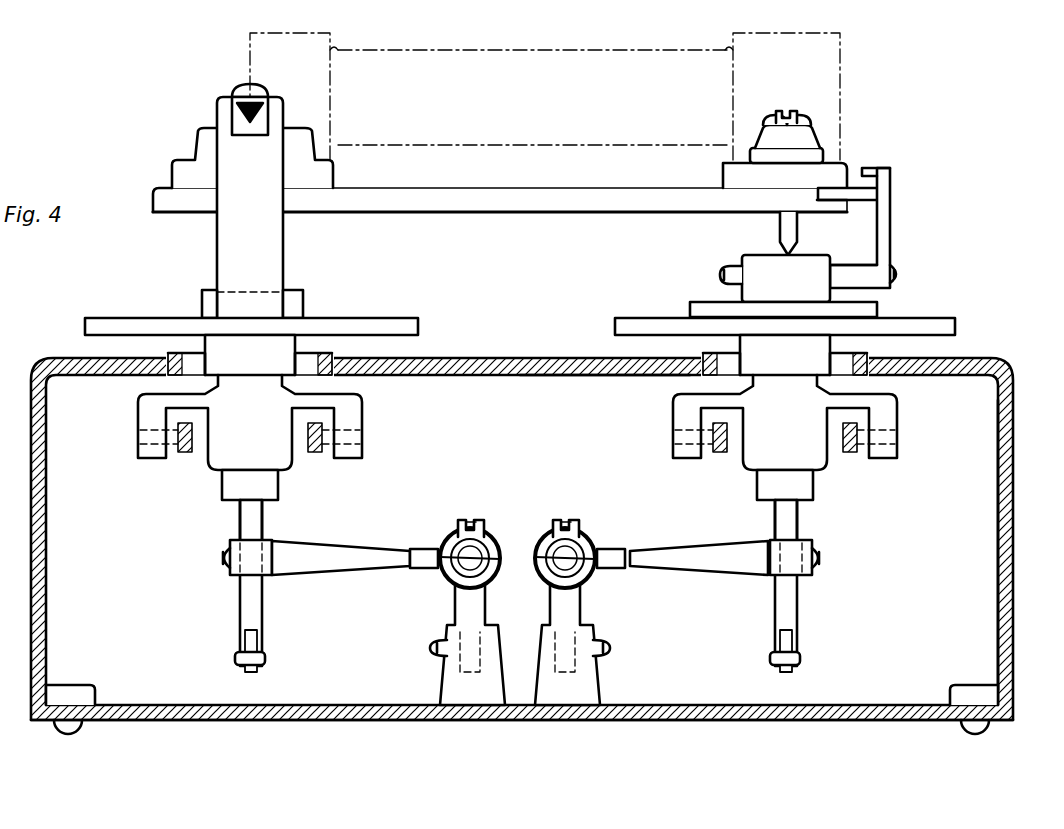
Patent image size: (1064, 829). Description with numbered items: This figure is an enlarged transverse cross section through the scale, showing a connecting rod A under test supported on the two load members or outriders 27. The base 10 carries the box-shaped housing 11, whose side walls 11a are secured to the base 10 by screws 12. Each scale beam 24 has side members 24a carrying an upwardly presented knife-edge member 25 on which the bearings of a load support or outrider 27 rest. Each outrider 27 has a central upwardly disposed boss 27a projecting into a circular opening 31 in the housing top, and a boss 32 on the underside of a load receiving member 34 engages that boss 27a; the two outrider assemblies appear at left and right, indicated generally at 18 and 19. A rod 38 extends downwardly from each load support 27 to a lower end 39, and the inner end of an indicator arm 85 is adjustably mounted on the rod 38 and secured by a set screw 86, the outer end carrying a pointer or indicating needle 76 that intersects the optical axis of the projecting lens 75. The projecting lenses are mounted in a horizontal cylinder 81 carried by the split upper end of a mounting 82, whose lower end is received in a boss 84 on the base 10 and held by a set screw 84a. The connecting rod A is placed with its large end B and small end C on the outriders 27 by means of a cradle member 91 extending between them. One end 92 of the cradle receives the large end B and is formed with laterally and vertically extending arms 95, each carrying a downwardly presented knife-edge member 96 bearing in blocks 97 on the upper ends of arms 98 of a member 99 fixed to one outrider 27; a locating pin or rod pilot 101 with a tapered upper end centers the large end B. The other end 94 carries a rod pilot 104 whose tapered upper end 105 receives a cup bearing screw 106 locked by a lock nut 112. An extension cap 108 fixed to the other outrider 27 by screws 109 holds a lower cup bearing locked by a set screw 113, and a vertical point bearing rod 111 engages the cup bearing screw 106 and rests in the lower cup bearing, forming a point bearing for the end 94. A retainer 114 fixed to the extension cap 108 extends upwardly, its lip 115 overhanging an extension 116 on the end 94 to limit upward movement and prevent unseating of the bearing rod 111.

The base 10 is at (218, 718).
The housing 11 is at (35, 374).
The side walls 11a is at (520, 362).
The screws 12 is at (70, 733).
The left relay 18 is at (182, 502).
The right relay 19 is at (857, 502).
The scale beam 24 is at (712, 462).
The side members 24a is at (185, 455).
The knife-edge member 25 is at (152, 436).
The load support or outrider 27 is at (232, 517).
The boss 27a is at (517, 460).
The circular opening 31 is at (200, 357).
The boss 32 is at (517, 355).
The load receiving member 34 is at (402, 318).
The rod 38 is at (245, 605).
The pin 39 is at (258, 670).
The projecting lens 75 is at (495, 578).
The pointer or indicating needle 76 is at (452, 582).
The cylinder 81 is at (555, 528).
The mounting 82 is at (455, 535).
The boss 84 is at (538, 680).
The set screw 84a is at (430, 648).
The indicator arm 85 is at (347, 572).
The set screw 86 is at (222, 555).
The cradle member 91 is at (522, 212).
The cradle end 92 is at (165, 214).
The cradle end 94 is at (835, 213).
The arms 95 is at (240, 88).
The knife-edge member 96 is at (232, 112).
The blocks 97 is at (262, 120).
The arms 98 is at (285, 235).
The member 99 is at (300, 305).
The locating pin or rod pilot 101 is at (195, 140).
The rod pilot 104 is at (785, 176).
The tapered upper end 105 is at (818, 135).
The cup bearing screw 106 is at (763, 110).
The extension cap 108 is at (783, 286).
The screws 109 is at (845, 300).
The point bearing rod 111 is at (760, 235).
The lock nut 112 is at (797, 118).
The set screw 113 is at (722, 270).
The retainer 114 is at (892, 234).
The upper end or lip 115 is at (882, 165).
The extension 116 is at (880, 194).
The connecting rod A is at (512, 62).
The large end B is at (248, 44).
The small end C is at (838, 62).